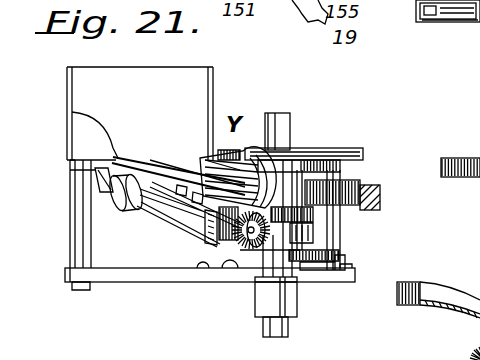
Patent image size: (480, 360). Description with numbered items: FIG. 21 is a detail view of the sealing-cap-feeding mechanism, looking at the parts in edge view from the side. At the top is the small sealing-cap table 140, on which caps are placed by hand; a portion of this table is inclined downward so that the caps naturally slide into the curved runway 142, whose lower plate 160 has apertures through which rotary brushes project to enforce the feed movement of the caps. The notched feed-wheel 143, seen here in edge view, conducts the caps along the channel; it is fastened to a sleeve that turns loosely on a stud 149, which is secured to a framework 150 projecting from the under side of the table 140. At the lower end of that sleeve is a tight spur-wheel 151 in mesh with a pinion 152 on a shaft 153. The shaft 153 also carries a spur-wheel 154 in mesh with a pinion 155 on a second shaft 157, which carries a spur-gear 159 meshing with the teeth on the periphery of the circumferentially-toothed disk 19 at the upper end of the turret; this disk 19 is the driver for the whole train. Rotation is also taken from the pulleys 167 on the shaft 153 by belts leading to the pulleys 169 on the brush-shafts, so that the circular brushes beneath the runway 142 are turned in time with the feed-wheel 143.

The sealing-cap table 140 is at (118, 158).
The curved runway 142 is at (272, 128).
The notched feed-wheel 143 is at (340, 148).
The stud 149 is at (289, 328).
The framework 150 is at (160, 282).
The spur-wheel 151 is at (300, 226).
The pinion 152 is at (290, 262).
The shaft 153 is at (320, 217).
The spur-wheel 154 is at (347, 267).
The pinion 155 is at (367, 163).
The shaft 157 is at (350, 178).
The spur-gear 159 is at (360, 180).
The lower plate 160 is at (472, 302).
The pulleys 167 is at (320, 250).
The pulleys 169 is at (152, 226).
The circumferentially-toothed disk 19 is at (462, 216).